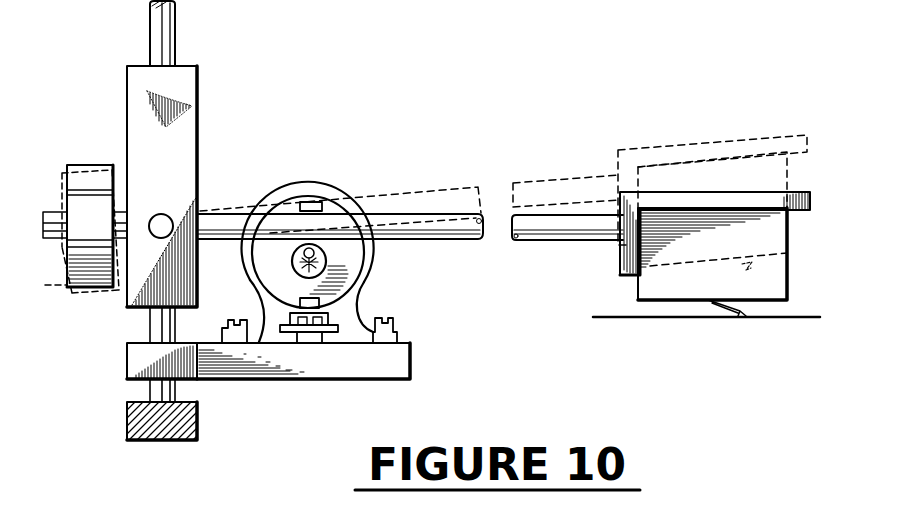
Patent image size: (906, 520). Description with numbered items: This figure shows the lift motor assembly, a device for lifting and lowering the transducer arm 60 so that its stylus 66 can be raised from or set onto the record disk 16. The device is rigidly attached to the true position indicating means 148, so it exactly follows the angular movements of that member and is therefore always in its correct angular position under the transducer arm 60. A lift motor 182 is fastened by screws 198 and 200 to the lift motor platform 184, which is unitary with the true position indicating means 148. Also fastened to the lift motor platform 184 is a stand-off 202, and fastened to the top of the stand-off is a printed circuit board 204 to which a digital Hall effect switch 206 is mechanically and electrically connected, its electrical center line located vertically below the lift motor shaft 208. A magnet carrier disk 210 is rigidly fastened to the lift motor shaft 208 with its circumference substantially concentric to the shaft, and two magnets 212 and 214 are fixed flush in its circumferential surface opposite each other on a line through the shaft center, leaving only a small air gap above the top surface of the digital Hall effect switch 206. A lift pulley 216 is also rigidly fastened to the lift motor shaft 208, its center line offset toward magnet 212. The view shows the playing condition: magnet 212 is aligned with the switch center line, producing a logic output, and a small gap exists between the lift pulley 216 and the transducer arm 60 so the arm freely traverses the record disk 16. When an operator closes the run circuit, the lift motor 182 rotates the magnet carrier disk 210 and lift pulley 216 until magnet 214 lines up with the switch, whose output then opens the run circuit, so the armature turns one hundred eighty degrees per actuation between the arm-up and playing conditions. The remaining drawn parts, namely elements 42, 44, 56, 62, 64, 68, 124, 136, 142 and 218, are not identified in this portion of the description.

The upper shaft 42 is at (150, 33).
The column 136 is at (200, 97).
The aperture 56 is at (161, 213).
The gear 68 is at (90, 165).
The lift motor 182 is at (333, 193).
The magnet carrier disk 210 is at (284, 190).
The magnet 214 is at (312, 201).
The lift motor shaft 208 is at (327, 262).
The lift pulley 216 is at (292, 262).
The hub 218 is at (303, 287).
The magnet 212 is at (300, 299).
The digital Hall effect switch 206 is at (362, 300).
The printed circuit board 204 is at (338, 326).
The stand-off 202 is at (331, 338).
The screw 200 is at (228, 326).
The screw 198 is at (400, 325).
The lift motor platform 184 is at (414, 361).
The true position indicating means 148 is at (122, 361).
The shaft 44 is at (150, 327).
The mounting block 124 is at (122, 422).
The bottom face 142 is at (161, 442).
The transducer arm 60 is at (572, 241).
The plate 62 is at (811, 200).
The block 64 is at (788, 268).
The stylus 66 is at (748, 314).
The record disk 16 is at (669, 323).